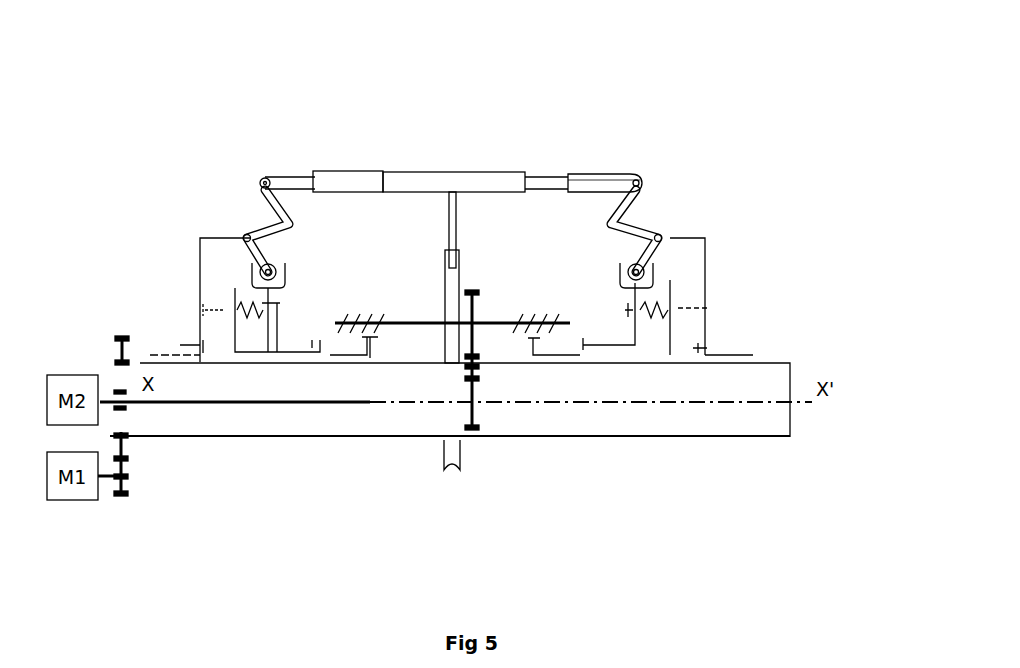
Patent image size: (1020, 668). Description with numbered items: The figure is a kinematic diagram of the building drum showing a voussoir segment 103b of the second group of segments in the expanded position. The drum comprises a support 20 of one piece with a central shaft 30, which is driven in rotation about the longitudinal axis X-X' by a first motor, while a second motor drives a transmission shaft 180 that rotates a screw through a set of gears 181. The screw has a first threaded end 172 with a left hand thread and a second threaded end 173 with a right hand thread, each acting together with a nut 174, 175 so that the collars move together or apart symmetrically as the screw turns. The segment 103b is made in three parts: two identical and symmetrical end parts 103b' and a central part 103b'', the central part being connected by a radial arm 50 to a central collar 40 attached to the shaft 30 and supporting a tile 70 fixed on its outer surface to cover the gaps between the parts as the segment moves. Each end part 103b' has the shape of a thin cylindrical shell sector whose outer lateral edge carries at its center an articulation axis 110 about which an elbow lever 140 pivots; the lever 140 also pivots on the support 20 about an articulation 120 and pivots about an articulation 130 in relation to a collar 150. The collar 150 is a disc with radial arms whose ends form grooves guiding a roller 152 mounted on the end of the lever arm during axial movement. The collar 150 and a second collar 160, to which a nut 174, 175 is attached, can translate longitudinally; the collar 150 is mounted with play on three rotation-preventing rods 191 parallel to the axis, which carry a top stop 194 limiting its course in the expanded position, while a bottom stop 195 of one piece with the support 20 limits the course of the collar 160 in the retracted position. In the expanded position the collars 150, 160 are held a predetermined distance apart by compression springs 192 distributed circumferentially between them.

The support 20 is at (200, 240).
The central shaft 30 is at (790, 365).
The central collar 40 is at (450, 463).
The radial arm 50 is at (450, 180).
The tile 70 is at (557, 172).
The voussoir segment 103b is at (416, 99).
The end part of voussoir segment 103b' is at (538, 118).
The central part of voussoir segment 103b'' is at (493, 118).
The articulation axis 110 is at (265, 180).
The articulation 120 is at (258, 258).
The articulation 130 is at (258, 270).
The elbow lever 140 is at (640, 223).
The collar 150 is at (267, 290).
The roller 152 is at (243, 238).
The collar 160 is at (233, 330).
The first threaded end 172 is at (383, 330).
The second threaded end 173 is at (557, 330).
The nut 174 is at (372, 318).
The nut 175 is at (537, 305).
The transmission shaft 180 is at (355, 405).
The set of gears 181 is at (478, 345).
The rotation-preventing rod 191 is at (203, 310).
The compression spring 192 is at (197, 340).
The top stop 194 is at (277, 307).
The bottom stop 195 is at (193, 330).